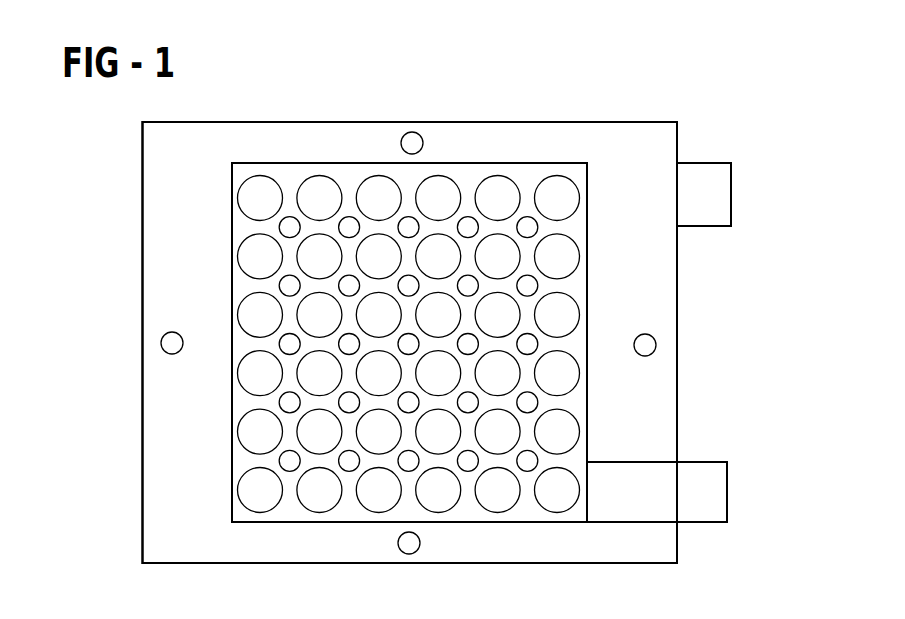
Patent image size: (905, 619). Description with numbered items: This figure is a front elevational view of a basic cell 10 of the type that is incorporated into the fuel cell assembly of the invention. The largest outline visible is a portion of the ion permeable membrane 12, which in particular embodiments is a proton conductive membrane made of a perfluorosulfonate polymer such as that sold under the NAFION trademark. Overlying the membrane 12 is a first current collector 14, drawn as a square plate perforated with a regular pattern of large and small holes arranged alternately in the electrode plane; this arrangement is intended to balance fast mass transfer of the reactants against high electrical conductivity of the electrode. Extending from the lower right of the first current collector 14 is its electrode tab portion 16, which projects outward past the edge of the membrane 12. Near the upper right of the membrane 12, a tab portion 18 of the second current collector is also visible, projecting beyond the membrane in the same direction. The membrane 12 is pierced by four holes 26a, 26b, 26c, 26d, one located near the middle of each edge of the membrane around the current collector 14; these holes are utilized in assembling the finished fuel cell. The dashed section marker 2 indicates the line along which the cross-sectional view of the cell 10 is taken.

The cell 10 is at (410, 304).
The ion permeable membrane 12 is at (140, 491).
The first current collector 14 is at (557, 523).
The electrode tab portion 16 is at (731, 452).
The tab portion of second current collector 18 is at (740, 196).
The hole 26a is at (412, 132).
The hole 26b is at (656, 345).
The hole 26c is at (409, 554).
The hole 26d is at (162, 344).
The section line 2- 2 is at (318, 115).